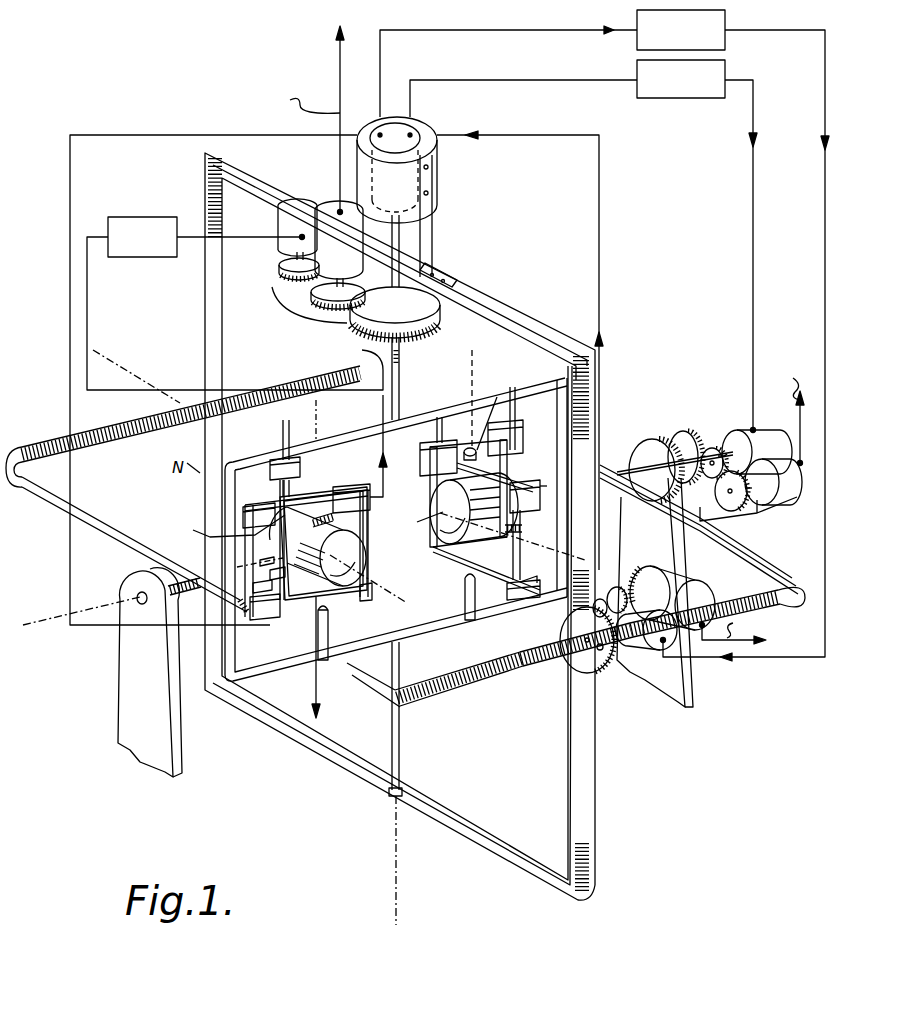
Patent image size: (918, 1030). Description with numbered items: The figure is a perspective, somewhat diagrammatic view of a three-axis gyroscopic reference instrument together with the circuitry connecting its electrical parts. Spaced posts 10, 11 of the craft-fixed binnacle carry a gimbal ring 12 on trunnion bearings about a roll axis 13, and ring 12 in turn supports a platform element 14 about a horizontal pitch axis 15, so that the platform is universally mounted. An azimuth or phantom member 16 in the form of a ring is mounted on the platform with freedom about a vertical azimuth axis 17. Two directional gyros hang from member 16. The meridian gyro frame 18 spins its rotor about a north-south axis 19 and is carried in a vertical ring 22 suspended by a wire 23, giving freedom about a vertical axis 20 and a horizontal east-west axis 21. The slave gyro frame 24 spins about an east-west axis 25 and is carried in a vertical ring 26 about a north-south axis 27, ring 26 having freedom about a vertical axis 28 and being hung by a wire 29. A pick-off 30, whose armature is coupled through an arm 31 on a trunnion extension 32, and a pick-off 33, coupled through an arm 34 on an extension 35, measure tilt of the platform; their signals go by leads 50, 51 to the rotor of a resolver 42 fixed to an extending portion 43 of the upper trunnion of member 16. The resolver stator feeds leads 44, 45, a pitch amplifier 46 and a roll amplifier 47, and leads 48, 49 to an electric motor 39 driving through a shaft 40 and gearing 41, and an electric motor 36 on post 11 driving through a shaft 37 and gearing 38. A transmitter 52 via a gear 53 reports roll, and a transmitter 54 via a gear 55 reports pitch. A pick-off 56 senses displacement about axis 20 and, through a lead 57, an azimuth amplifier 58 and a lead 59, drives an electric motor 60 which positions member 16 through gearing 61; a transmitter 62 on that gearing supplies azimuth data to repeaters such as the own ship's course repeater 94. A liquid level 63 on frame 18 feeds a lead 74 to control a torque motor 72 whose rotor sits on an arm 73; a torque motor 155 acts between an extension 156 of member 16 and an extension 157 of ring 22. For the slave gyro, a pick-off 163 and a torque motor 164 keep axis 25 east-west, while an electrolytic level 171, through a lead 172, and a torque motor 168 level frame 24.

The post 10 is at (118, 700).
The post 11 is at (690, 684).
The gimbal ring 12 is at (114, 440).
The roll axis 13 is at (50, 625).
The platform element 14 is at (500, 313).
The pitch axis 15 is at (127, 372).
The azimuth or phantom member 16 is at (410, 419).
The azimuth axis 17 is at (399, 888).
The frame of the meridian gyro 18 is at (360, 550).
The spin axis 19 is at (385, 582).
The vertical axis 20 is at (340, 432).
The horizontal axis 21 is at (263, 560).
The vertical ring 22 is at (357, 597).
The wire 23 is at (347, 445).
The frame of the slave gyro 24 is at (477, 533).
The spin axis 25 is at (430, 518).
The vertical ring 26 is at (513, 478).
The axis 27 is at (545, 556).
The vertical axis 28 is at (473, 372).
The wire 29 is at (502, 400).
The pick-off 30 is at (271, 623).
The arm 31 is at (267, 592).
The extending portion of the trunnion 32 is at (280, 577).
The pick-off 33 is at (537, 598).
The arm 34 is at (522, 560).
The extending portion of the trunnion 35 is at (521, 527).
The electric motor 36 is at (767, 430).
The shaft 37 is at (717, 443).
The gearing 38 is at (693, 430).
The electric motor 39 is at (642, 638).
The shaft 40 is at (622, 590).
The gearing 41 is at (600, 604).
The resolver 42 is at (437, 157).
The extending portion of the upper trunnion 43 is at (397, 238).
The lead 44 is at (487, 31).
The lead 45 is at (490, 80).
The pitch amplifier 46 is at (722, 23).
The roll amplifier 47 is at (713, 92).
The lead 48 is at (825, 232).
The lead 49 is at (753, 310).
The lead 50 is at (70, 413).
The lead 51 is at (600, 263).
The electrical signal transmitter 52 is at (787, 488).
The gear 53 is at (733, 501).
The electrical signal transmitter 54 is at (707, 600).
The gear 55 is at (655, 576).
The pick-off 56 is at (380, 497).
The lead 57 is at (88, 296).
The azimuth amplifier 58 is at (146, 217).
The lead 59 is at (252, 235).
The electric motor 60 is at (298, 197).
The gearing 61 is at (283, 282).
The electrical transmitter 62 is at (358, 220).
The liquid level 63 is at (305, 516).
The torque motor 72 is at (248, 507).
The arm 73 is at (229, 526).
The lead 74 is at (313, 688).
The repeater 94 is at (340, 62).
The torque motor 155 is at (277, 453).
The extension 156 is at (287, 432).
The extension 157 is at (282, 490).
The pick-off 163 is at (413, 463).
The torque motor 164 is at (527, 500).
The torque motor 168 is at (530, 427).
The electrolytic level 171 is at (470, 470).
The lead 172 is at (450, 582).